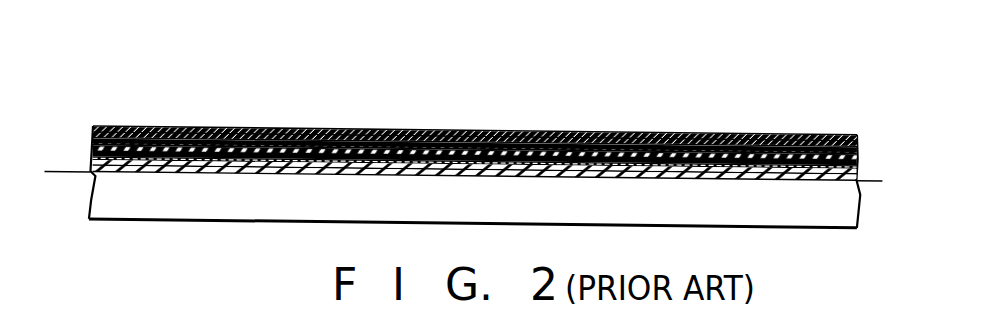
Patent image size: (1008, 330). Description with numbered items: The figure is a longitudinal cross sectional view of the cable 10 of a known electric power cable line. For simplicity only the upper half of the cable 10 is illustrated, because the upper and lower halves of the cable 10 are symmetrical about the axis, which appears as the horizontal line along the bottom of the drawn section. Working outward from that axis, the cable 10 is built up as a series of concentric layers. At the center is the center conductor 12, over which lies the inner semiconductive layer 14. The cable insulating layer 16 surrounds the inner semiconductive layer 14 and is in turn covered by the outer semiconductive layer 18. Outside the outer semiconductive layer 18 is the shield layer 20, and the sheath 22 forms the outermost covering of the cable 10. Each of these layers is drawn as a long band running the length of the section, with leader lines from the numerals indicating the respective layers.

The cable 10 is at (463, 133).
The center conductor 12 is at (325, 128).
The inner semiconductive layer 14 is at (383, 130).
The cable insulating layer 16 is at (435, 130).
The outer semiconductive layer 18 is at (497, 131).
The shield layer 20 is at (555, 132).
The sheath 22 is at (609, 132).